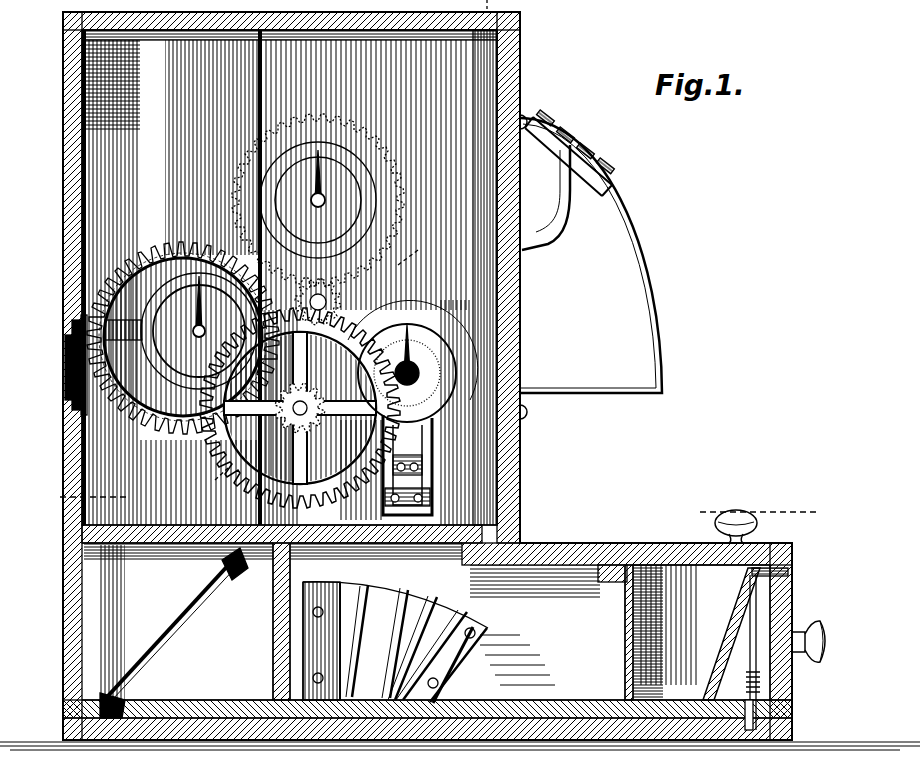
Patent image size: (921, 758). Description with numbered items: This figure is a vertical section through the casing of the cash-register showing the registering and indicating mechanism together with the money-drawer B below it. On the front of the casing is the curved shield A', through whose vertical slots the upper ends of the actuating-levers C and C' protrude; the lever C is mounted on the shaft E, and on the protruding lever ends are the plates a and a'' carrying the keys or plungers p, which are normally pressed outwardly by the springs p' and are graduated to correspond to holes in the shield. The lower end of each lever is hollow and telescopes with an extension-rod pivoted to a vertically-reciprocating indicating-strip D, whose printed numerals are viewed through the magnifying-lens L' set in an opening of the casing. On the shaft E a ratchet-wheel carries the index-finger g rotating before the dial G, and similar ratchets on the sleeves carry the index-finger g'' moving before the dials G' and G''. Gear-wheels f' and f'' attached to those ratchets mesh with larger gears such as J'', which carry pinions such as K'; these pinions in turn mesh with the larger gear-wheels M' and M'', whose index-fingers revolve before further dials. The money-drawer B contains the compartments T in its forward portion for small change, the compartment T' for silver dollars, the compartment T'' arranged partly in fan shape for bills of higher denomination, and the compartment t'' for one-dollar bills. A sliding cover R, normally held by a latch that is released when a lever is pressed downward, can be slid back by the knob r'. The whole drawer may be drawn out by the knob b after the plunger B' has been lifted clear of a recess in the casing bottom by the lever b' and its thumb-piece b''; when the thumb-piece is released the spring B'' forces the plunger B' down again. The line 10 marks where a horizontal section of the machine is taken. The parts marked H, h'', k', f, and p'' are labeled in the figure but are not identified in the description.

The curved shield A' is at (460, 375).
The upper compartment H is at (361, 75).
The larger gear-wheel M'' is at (334, 200).
The upper dial with pointer h'' is at (318, 200).
The left dial with pointer k' is at (199, 320).
The pinion K' is at (300, 393).
The larger gear J'' is at (413, 251).
The compartment T' is at (216, 482).
The magnifying-lens L' is at (183, 348).
The larger gear-wheel M' is at (183, 362).
The plate a is at (123, 345).
The index-finger g is at (413, 359).
The index-finger g'' is at (410, 303).
The sliding frame f is at (421, 465).
The gear-wheel f' is at (489, 359).
The gear-wheel f'' is at (484, 330).
The dial G is at (538, 420).
The dial G' is at (485, 348).
The dial G'' is at (488, 316).
The shaft E is at (420, 378).
The actuating-lever C is at (396, 380).
The actuating-lever C' is at (169, 639).
The plate a'' is at (582, 155).
The plunger p is at (579, 123).
The spring p' is at (596, 139).
The coupling pin p'' is at (172, 581).
The section line 10 is at (440, 504).
The indicating-strip D is at (110, 612).
The compartment T'' is at (429, 642).
The compartment t'' is at (596, 637).
The sliding cover R is at (620, 548).
The compartment T is at (730, 634).
The plunger B' is at (742, 652).
The spring B'' is at (743, 682).
The lever b' is at (785, 568).
The thumb-piece b'' is at (787, 546).
The money-drawer B is at (807, 587).
The knob r' is at (736, 510).
The knob b is at (808, 655).